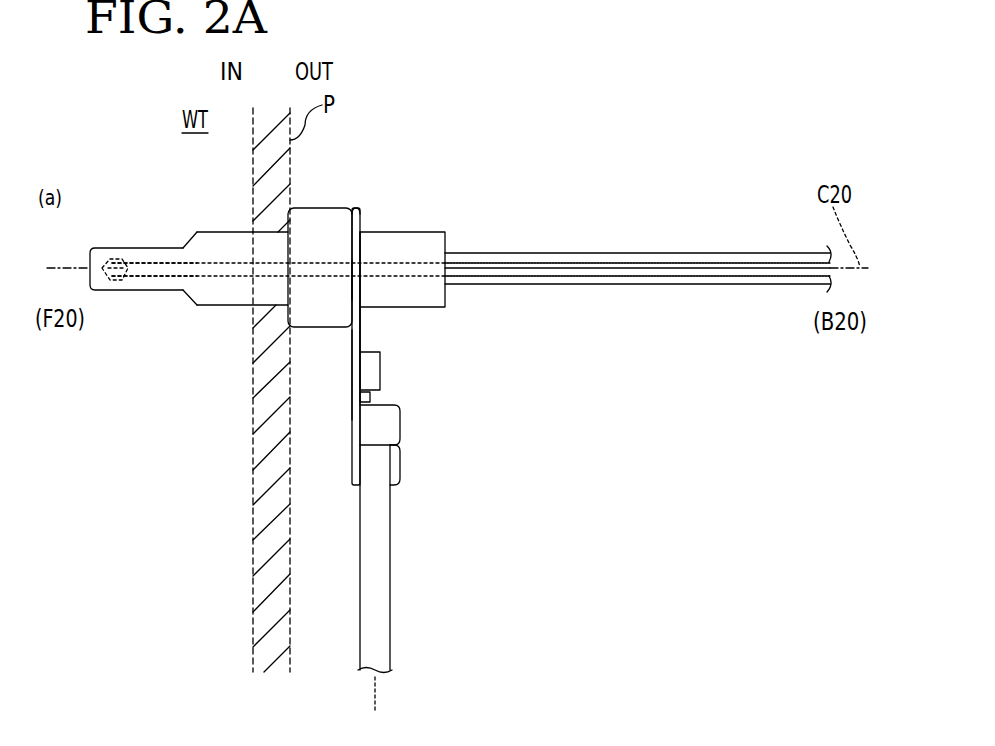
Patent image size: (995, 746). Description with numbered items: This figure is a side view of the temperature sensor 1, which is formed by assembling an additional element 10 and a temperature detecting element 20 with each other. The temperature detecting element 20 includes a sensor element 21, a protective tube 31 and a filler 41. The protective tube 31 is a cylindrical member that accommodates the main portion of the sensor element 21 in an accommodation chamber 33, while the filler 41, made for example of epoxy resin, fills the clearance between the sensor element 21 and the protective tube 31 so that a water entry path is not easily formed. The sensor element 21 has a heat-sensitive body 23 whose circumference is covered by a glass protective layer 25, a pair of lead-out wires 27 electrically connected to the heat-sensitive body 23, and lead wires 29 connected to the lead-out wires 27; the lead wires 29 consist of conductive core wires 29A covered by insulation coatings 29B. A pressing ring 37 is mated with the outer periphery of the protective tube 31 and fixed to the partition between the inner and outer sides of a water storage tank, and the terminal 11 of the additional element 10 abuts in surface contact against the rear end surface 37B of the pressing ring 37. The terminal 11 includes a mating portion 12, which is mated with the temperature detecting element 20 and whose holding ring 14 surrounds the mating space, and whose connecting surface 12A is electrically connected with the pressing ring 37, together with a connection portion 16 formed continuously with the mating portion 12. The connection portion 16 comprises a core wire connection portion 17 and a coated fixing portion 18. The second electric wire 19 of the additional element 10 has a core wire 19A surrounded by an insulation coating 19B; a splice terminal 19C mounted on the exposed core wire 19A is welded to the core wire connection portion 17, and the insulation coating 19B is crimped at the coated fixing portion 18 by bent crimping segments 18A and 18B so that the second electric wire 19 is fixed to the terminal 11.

The temperature sensor 1 is at (415, 144).
The additional element 10 is at (438, 363).
The terminal 11 is at (362, 218).
The mating portion 12 is at (362, 298).
The connecting surface 12A is at (351, 283).
The holding ring 14 is at (356, 346).
The connection portion 16 is at (351, 372).
The core wire connection portion 17 is at (361, 335).
The coated fixing portion 18 is at (518, 430).
The crimping segment 18A is at (402, 463).
The crimping segment 18B is at (402, 423).
The second electric wire 19 is at (391, 578).
The core wire 19A is at (391, 523).
The insulation coating 19B is at (371, 394).
The splice terminal 19C is at (381, 365).
The temperature detecting element 20 is at (440, 214).
The sensor element 21 is at (192, 257).
The heat-sensitive body 23 is at (112, 290).
The protective layer 25 is at (121, 249).
The lead-out wires 27 is at (208, 252).
The lead wires 29 is at (551, 252).
The core wires 29A is at (626, 260).
The insulation coatings 29B is at (707, 252).
The protective tube 31 is at (147, 248).
The accommodation chamber 33 is at (162, 278).
The pressing ring 37 is at (312, 208).
The rear end surface 37B is at (357, 208).
The filler 41 is at (187, 306).